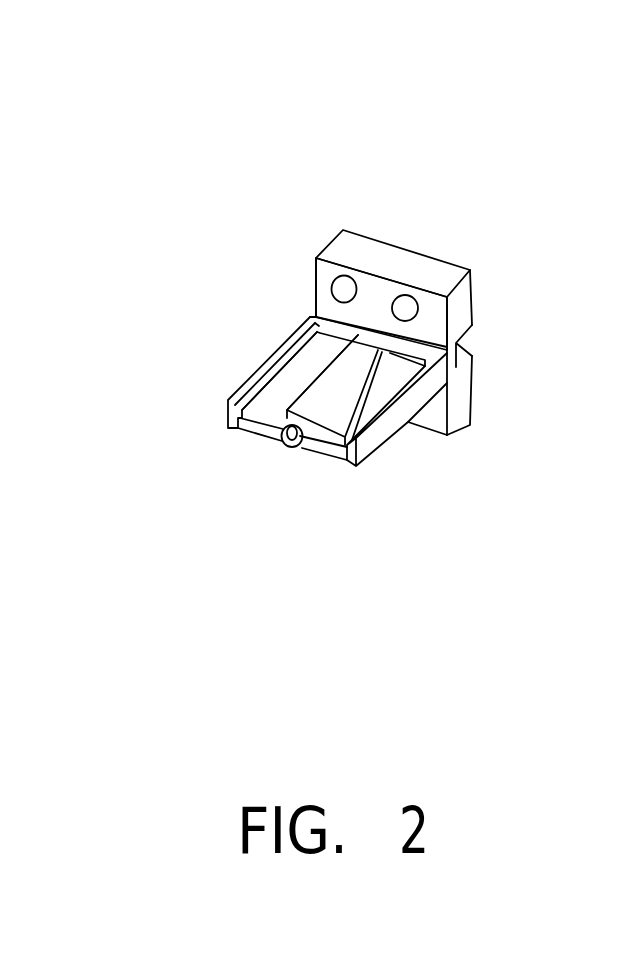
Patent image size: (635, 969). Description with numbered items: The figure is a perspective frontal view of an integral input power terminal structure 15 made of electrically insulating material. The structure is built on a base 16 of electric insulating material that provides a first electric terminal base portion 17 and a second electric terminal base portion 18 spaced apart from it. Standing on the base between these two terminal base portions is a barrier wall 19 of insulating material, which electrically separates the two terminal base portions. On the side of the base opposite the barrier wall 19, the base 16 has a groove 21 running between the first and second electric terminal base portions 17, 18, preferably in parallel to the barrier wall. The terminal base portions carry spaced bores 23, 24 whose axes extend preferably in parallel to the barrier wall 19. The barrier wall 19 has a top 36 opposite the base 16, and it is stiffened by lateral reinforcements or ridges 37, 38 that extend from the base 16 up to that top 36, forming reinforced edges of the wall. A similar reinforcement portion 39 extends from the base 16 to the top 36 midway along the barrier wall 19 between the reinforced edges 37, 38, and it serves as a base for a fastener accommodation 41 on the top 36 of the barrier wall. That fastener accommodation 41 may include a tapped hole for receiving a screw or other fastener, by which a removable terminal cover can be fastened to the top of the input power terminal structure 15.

The input power terminal structure 15 is at (375, 456).
The base 16 is at (378, 236).
The first electric terminal base portion 17 is at (407, 263).
The second electric terminal base portion 18 is at (463, 407).
The barrier wall 19 is at (303, 367).
The groove 21 is at (473, 352).
The bore 23 is at (412, 303).
The bore 24 is at (338, 277).
The top 36 is at (327, 453).
The lateral reinforcement 37 is at (392, 420).
The lateral reinforcement 38 is at (262, 363).
The reinforcement portion 39 is at (342, 377).
The fastener accommodation 41 is at (281, 440).